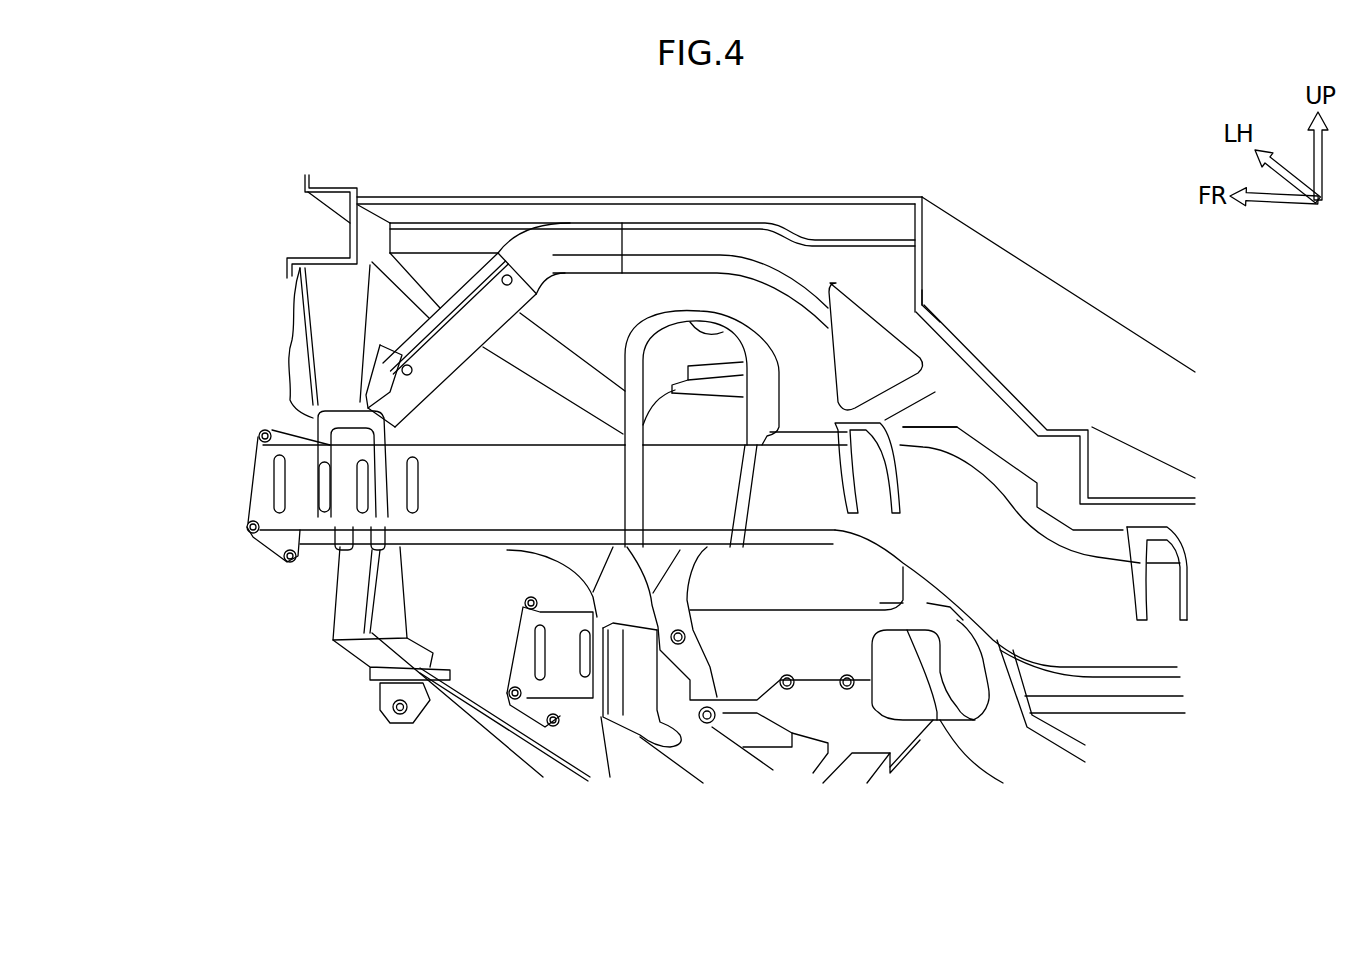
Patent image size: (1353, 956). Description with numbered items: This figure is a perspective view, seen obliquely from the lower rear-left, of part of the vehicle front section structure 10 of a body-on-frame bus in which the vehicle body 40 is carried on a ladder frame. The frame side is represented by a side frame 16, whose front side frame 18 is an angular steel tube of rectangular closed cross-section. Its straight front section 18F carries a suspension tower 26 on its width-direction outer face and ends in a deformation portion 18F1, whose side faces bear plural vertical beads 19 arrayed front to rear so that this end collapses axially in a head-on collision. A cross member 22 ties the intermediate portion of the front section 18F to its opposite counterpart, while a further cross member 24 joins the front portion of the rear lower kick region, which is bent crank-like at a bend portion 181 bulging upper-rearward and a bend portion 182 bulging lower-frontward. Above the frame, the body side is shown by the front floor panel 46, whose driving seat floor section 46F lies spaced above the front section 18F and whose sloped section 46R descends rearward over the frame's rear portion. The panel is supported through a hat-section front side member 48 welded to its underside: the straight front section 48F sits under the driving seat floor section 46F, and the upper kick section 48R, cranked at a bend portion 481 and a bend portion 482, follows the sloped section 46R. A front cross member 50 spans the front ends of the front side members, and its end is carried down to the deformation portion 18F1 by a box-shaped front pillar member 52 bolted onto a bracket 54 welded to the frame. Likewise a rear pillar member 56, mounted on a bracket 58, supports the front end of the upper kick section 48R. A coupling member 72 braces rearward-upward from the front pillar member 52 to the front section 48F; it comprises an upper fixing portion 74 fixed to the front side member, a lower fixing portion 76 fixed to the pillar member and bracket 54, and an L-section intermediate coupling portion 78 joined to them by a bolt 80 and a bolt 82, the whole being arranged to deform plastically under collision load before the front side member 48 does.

The vehicle front section structure 10 is at (147, 372).
The side frame 16 is at (230, 555).
The front side frame 18 is at (810, 608).
The front section 18F is at (465, 547).
The deformation portion 18F1 is at (313, 553).
The bend portion 181 is at (938, 473).
The bend portion 182 is at (1053, 637).
The beads 19 is at (318, 490).
The cross member 22 is at (670, 760).
The cross member 24 is at (972, 772).
The suspension tower 26 is at (705, 320).
The vehicle body 40 is at (269, 216).
The front floor panel 46 is at (1068, 291).
The driving seat floor section 46F is at (765, 196).
The sloped section 46R is at (1057, 407).
The front side member 48 is at (826, 238).
The front section 48F is at (662, 238).
The upper kick section 48R is at (988, 417).
The bend portion 481 is at (893, 277).
The bend portion 482 is at (1063, 470).
The front cross member 50 is at (328, 191).
The front pillar member 52 is at (297, 327).
The bracket 54 is at (330, 434).
The rear pillar member 56 is at (855, 323).
The bracket 58 is at (900, 490).
The coupling member 72 is at (446, 299).
The upper fixing portion 74 is at (587, 267).
The lower fixing portion 76 is at (378, 372).
The intermediate coupling portion 78 is at (471, 354).
The bolt 80 is at (508, 274).
The bolt 82 is at (410, 377).